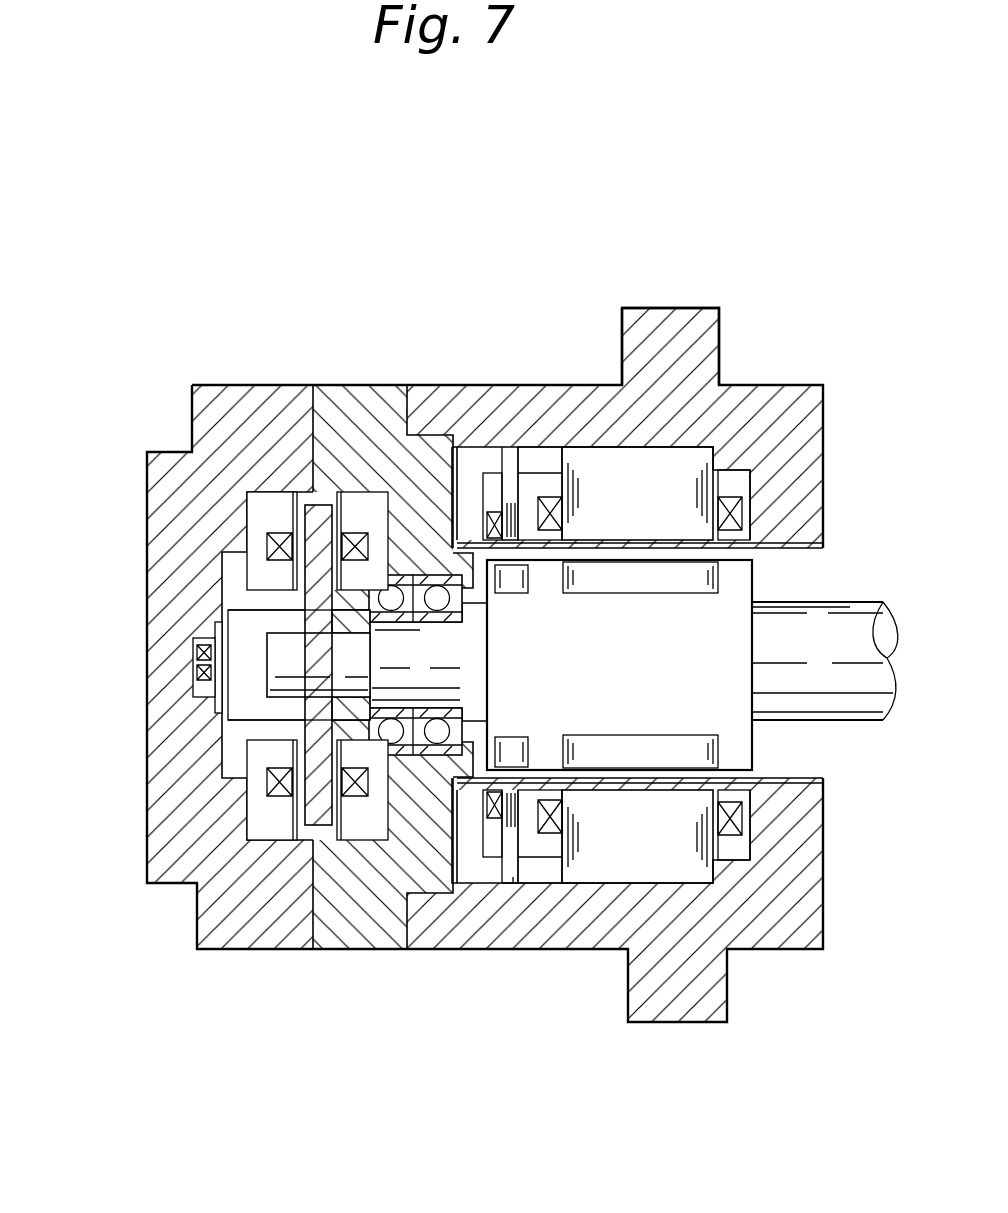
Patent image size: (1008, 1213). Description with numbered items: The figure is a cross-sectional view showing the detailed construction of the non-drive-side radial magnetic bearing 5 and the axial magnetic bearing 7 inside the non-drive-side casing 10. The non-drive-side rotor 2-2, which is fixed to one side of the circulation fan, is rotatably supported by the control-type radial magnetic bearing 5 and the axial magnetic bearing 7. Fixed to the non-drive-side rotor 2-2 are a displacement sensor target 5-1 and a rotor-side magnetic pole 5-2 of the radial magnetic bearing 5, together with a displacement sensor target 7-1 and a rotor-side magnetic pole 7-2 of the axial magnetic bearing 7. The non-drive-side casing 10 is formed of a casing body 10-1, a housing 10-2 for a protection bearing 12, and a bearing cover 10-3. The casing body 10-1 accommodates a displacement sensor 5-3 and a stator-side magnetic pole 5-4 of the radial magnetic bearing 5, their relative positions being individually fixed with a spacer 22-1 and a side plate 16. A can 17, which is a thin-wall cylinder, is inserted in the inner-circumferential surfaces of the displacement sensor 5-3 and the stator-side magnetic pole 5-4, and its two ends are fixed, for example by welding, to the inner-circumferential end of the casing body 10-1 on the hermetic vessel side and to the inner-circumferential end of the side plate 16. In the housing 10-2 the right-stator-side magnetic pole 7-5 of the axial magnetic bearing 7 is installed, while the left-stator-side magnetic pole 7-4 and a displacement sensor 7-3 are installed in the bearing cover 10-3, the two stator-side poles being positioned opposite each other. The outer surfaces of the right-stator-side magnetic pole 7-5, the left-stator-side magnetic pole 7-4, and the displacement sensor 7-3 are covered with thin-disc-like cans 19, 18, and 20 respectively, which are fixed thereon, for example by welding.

The non-drive-side casing 10 is at (597, 372).
The casing body 10-1 is at (687, 342).
The housing for protection bearing 10-2 is at (373, 403).
The bearing cover 10-3 is at (253, 412).
The can 17 is at (818, 778).
The control-type radial magnetic bearing 5 is at (598, 906).
The displacement sensor target 5-1 is at (510, 740).
The rotor-side magnetic pole 5-2 is at (638, 743).
The displacement sensor 5-3 is at (512, 877).
The stator-side magnetic pole 5-4 is at (690, 862).
The side plate 16 is at (477, 460).
The spacer 22-1 is at (537, 457).
The protection bearing 12 is at (423, 563).
The non-drive-side rotor 2-2 is at (848, 620).
The axial magnetic bearing 7 is at (172, 706).
The displacement sensor target 7-1 is at (247, 715).
The rotor-side magnetic pole 7-2 is at (320, 830).
The displacement sensor 7-3 is at (205, 660).
The left-stator-side magnetic pole 7-4 is at (260, 822).
The right-stator-side magnetic pole 7-5 is at (367, 830).
The can 18 is at (290, 507).
The can 19 is at (340, 513).
The can 20 is at (207, 632).